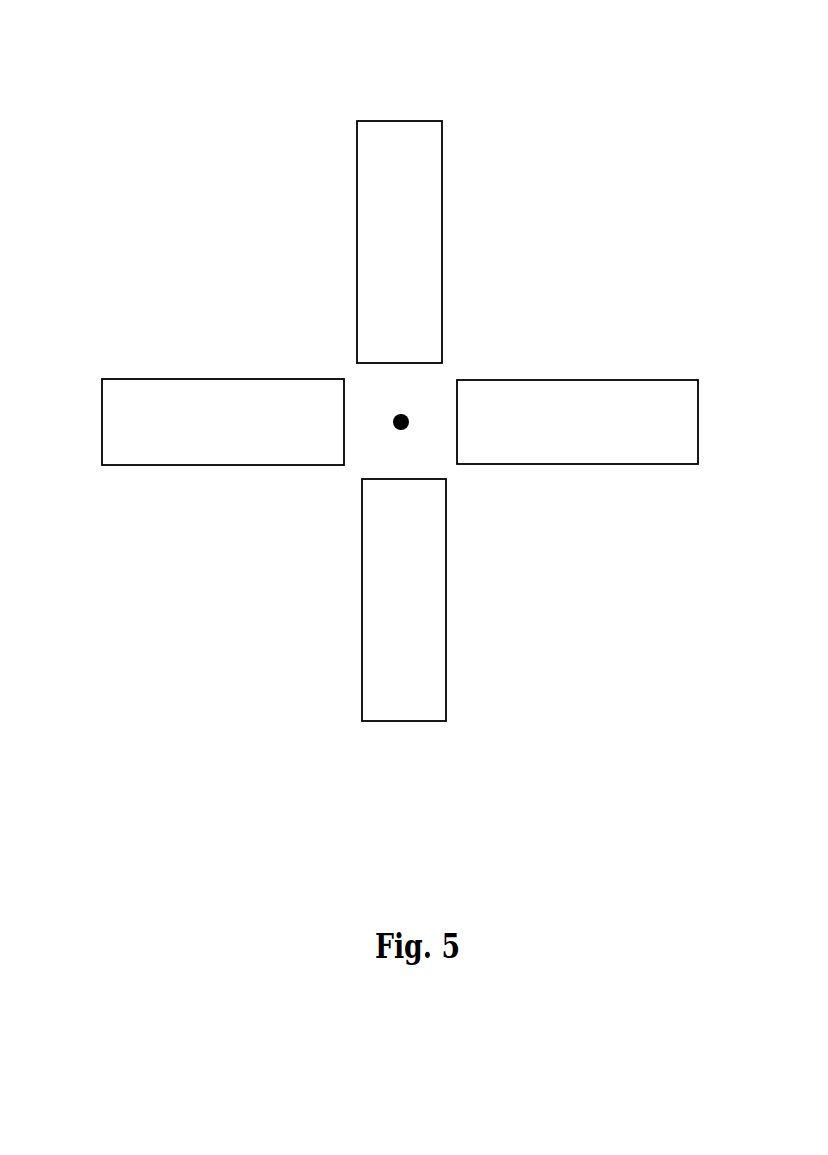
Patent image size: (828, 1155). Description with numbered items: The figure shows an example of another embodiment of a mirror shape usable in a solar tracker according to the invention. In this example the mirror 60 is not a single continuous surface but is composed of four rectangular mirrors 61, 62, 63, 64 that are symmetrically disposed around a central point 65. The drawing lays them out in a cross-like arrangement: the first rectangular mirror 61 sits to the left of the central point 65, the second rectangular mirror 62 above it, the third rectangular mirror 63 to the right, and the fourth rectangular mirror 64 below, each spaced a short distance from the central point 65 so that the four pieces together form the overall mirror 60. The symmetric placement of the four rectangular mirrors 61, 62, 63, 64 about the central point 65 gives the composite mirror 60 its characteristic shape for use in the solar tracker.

The mirror 60 is at (222, 122).
The rectangular mirror 61 is at (186, 404).
The rectangular mirror 62 is at (409, 145).
The rectangular mirror 63 is at (651, 395).
The rectangular mirror 64 is at (388, 682).
The central point 65 is at (392, 412).